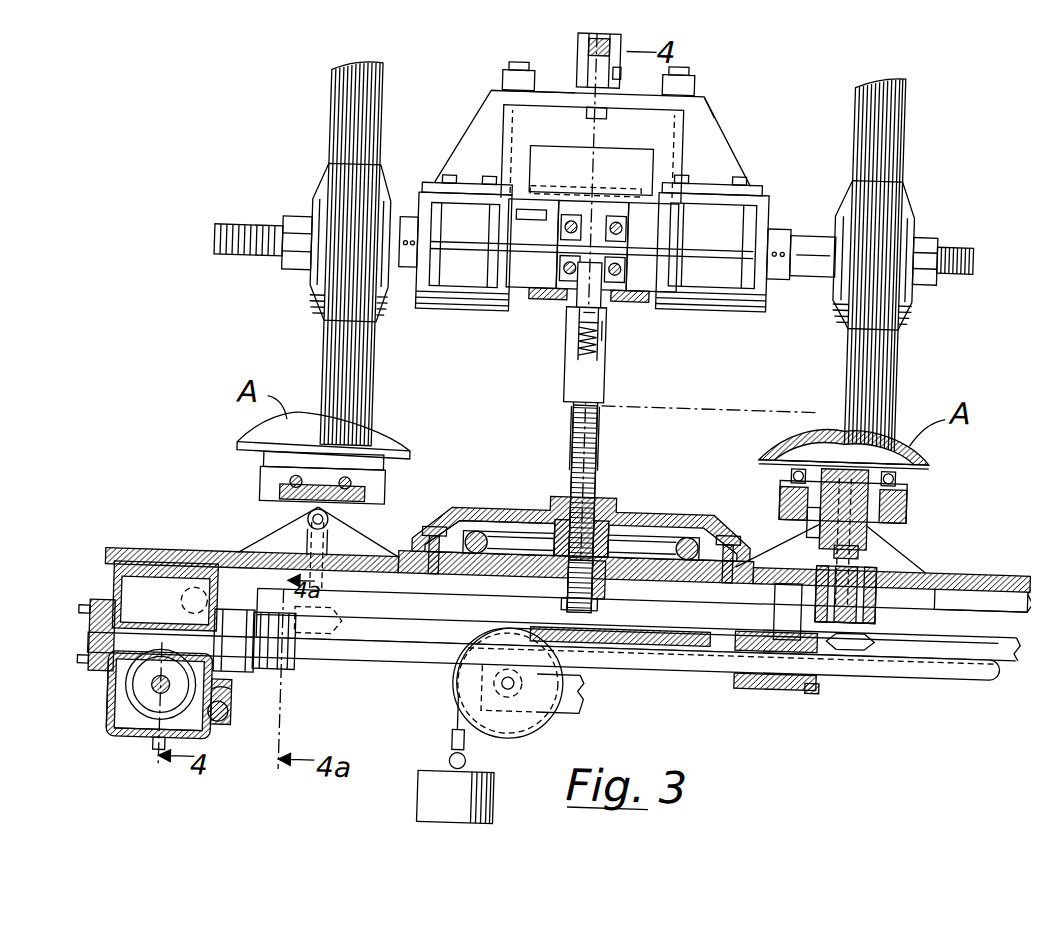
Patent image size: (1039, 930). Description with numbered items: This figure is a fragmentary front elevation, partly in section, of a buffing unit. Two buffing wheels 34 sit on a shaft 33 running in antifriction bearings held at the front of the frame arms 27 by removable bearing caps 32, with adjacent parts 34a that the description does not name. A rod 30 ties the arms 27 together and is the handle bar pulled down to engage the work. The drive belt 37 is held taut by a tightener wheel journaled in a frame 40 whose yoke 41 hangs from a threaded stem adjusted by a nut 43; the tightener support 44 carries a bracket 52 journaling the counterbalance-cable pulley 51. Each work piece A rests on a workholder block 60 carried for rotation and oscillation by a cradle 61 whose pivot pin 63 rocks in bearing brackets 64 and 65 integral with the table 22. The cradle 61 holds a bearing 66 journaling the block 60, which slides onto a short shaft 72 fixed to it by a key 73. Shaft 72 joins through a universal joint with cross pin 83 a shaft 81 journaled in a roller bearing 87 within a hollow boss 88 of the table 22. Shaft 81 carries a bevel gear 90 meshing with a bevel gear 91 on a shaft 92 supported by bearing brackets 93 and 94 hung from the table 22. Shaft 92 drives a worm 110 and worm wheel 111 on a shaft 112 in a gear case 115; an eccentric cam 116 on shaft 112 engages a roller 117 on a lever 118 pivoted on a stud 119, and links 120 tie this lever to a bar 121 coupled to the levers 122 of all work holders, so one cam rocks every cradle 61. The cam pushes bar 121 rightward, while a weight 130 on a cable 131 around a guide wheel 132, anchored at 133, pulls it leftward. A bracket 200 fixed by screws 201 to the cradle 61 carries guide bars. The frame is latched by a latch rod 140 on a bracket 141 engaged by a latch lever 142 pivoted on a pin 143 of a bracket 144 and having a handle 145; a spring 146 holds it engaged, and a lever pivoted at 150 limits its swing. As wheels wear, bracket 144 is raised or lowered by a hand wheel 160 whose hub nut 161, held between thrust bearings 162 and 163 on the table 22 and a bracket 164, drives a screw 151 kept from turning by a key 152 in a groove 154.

The table 22 is at (958, 563).
The arm 27 is at (470, 300).
The rod 30 is at (512, 250).
The bearing cap 32 is at (414, 188).
The shaft 33 is at (945, 240).
The buffing wheel 34 is at (338, 64).
The wheel hub 34a is at (370, 300).
The belt 37 is at (603, 192).
The frame 40 is at (511, 164).
The yoke 41 is at (690, 110).
The nut 43 is at (556, 92).
The support 44 is at (710, 112).
The pulley 51 is at (572, 44).
The bracket 52 is at (599, 70).
The workholder block 60 is at (262, 468).
The cradle 61 is at (258, 494).
The pivot pin 63 is at (306, 530).
The bearing bracket 64 is at (790, 532).
The bearing bracket 65 is at (350, 540).
The bearing 66 is at (905, 478).
The short shaft 72 is at (804, 508).
The key 73 is at (786, 468).
The shaft 81 is at (775, 624).
The cross pin 83 is at (857, 543).
The roller bearing 87 is at (870, 593).
The hollow boss 88 is at (878, 612).
The bevel gear 90 is at (343, 628).
The bevel gear 91 is at (290, 676).
The shaft 92 is at (376, 660).
The bearing bracket 93 is at (240, 676).
The bearing bracket 94 is at (755, 684).
The worm 110 is at (168, 628).
The worm wheel 111 is at (130, 700).
The shaft 112 is at (130, 730).
The gear case 115 is at (113, 748).
The cam 116 is at (110, 690).
The roller 117 is at (226, 692).
The lever 118 is at (228, 708).
The stud 119 is at (225, 732).
The links 120 is at (224, 596).
The bar 121 is at (420, 622).
The lever 122 is at (326, 556).
The weight 130 is at (423, 806).
The cable 131 is at (456, 728).
The guide wheel 132 is at (535, 712).
The anchorage 133 is at (712, 622).
The latch rod 140 is at (548, 240).
The bracket 141 is at (612, 220).
The latch lever 142 is at (608, 284).
The pin 143 is at (590, 312).
The bracket 144 is at (600, 360).
The handle 145 is at (571, 326).
The spring 146 is at (570, 352).
The pivot 150 is at (598, 338).
The screw 151 is at (566, 411).
The key 152 is at (568, 490).
The groove 154 is at (562, 606).
The hand wheel 160 is at (684, 530).
The nut 161 is at (608, 530).
The thrust bearing 162 is at (606, 592).
The thrust bearing 163 is at (592, 520).
The bracket 164 is at (450, 512).
The bracket 200 is at (364, 500).
The screws 201 is at (350, 488).